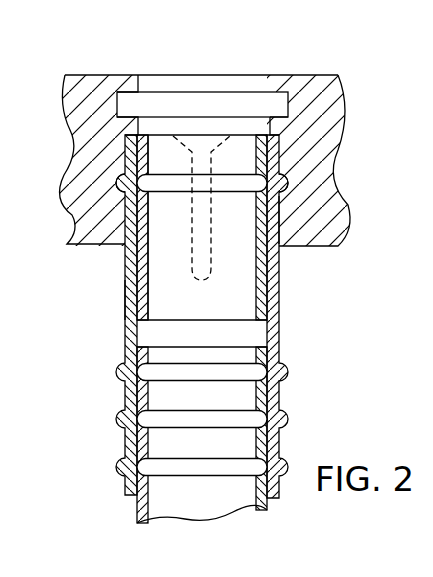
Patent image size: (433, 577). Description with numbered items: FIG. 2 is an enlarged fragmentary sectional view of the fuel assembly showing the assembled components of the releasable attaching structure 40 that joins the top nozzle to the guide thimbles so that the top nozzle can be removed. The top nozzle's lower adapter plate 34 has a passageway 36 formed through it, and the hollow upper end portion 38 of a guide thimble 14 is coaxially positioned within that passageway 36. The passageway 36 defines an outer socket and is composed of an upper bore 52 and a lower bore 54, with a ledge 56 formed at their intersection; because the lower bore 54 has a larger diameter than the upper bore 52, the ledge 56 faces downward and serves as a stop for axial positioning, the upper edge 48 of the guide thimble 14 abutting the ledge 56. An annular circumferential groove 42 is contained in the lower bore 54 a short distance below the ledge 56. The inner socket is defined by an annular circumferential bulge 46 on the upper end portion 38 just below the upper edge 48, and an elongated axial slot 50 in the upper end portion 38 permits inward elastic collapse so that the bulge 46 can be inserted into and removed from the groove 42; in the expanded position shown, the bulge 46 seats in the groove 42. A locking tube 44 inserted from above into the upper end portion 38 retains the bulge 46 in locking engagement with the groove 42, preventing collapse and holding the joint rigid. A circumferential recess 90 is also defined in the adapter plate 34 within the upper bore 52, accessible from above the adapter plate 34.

The guide thimble 14 is at (135, 510).
The lower adapter plate 34 is at (328, 160).
The passageway 36 is at (201, 84).
The upper end portion 38 is at (280, 331).
The attaching structure 40 is at (283, 214).
The annular circumferential groove 42 is at (150, 288).
The locking tube 44 is at (146, 291).
The annular circumferential bulge 46 is at (121, 184).
The upper edge 48 is at (271, 133).
The elongated axial slot 50 is at (203, 281).
The upper bore 52 is at (273, 132).
The lower bore 54 is at (128, 297).
The ledge 56 is at (125, 158).
The circumferential recess 90 is at (118, 108).